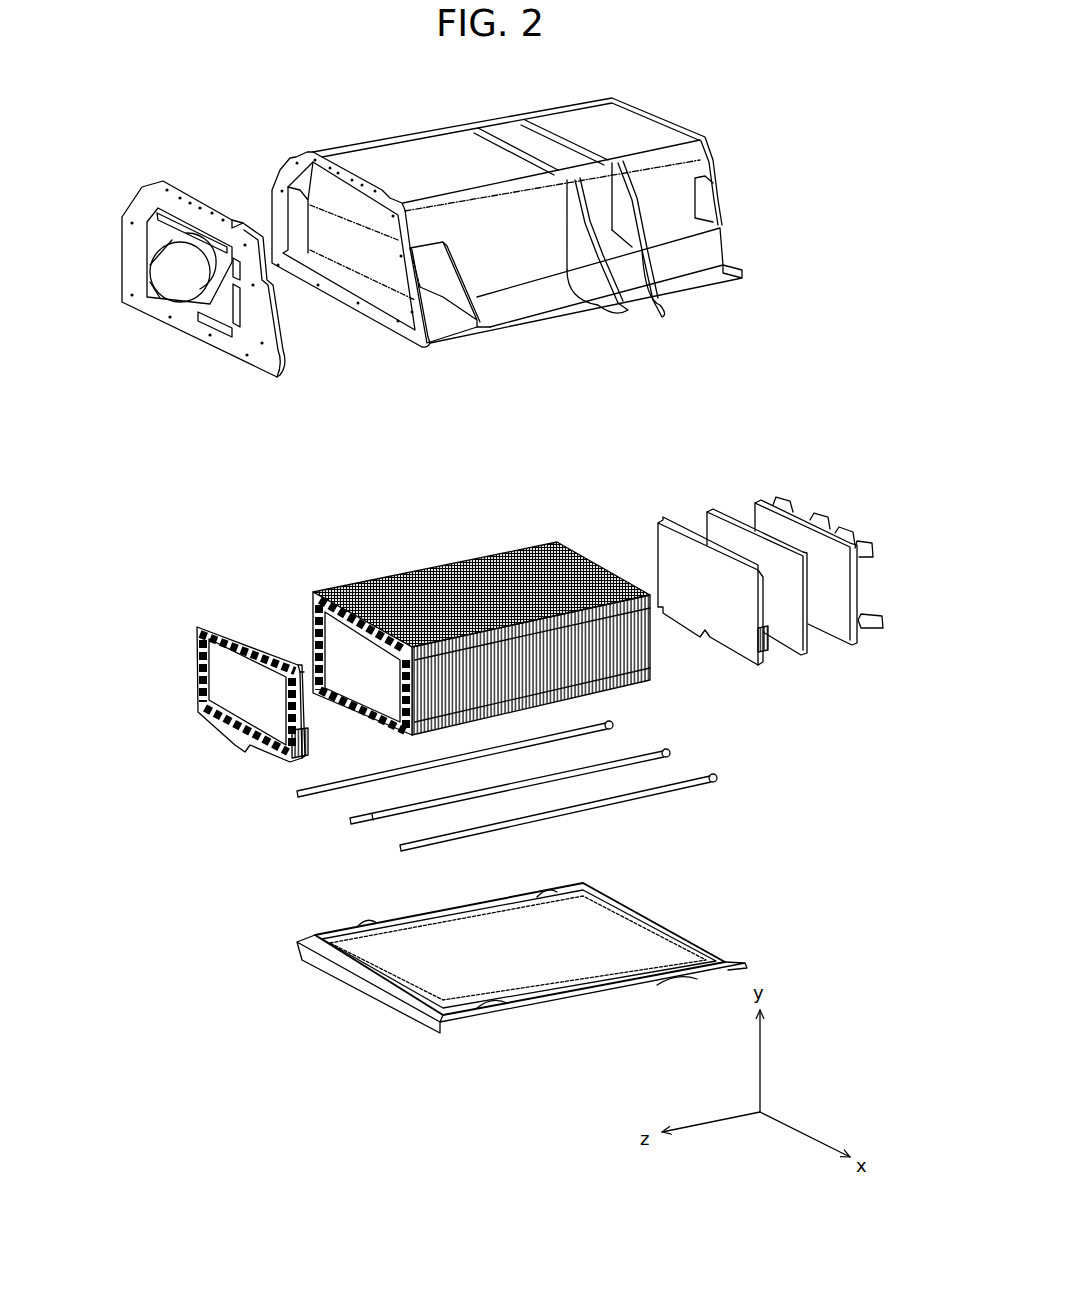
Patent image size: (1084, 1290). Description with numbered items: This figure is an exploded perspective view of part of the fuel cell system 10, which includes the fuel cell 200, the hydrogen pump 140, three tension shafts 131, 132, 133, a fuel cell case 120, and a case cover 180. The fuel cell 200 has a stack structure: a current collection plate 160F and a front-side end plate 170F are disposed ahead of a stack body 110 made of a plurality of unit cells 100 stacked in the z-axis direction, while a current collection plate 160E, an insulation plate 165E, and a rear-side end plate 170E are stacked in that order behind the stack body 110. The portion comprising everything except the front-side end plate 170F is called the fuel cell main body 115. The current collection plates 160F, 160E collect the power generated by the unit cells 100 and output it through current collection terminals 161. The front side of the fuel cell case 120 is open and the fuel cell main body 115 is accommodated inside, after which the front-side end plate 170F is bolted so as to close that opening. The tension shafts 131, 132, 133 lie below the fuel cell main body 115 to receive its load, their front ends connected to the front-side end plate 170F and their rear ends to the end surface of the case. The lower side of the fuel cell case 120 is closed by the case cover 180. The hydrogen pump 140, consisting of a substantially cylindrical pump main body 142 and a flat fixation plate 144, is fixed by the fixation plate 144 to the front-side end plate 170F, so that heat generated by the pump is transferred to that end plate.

The fuel cell system 10 is at (757, 116).
The unit cell 100 is at (433, 568).
The stack body 110 is at (797, 383).
The fuel cell main body 115 is at (397, 423).
The fuel cell case 120 is at (630, 100).
The tension shaft 131 is at (350, 822).
The tension shaft 132 is at (297, 795).
The tension shaft 133 is at (400, 849).
The hydrogen pump 140 is at (218, 149).
The pump main body 142 is at (128, 212).
The fixation plate 144 is at (175, 252).
The current collection plate 160F is at (203, 622).
The current collection plate 160E is at (672, 520).
The current collection terminal 161 is at (308, 745).
The insulation plate 165E is at (715, 507).
The front-side end plate 170F is at (285, 347).
The rear-side end plate 170E is at (762, 497).
The case cover 180 is at (590, 1005).
The fuel cell 200 is at (430, 383).